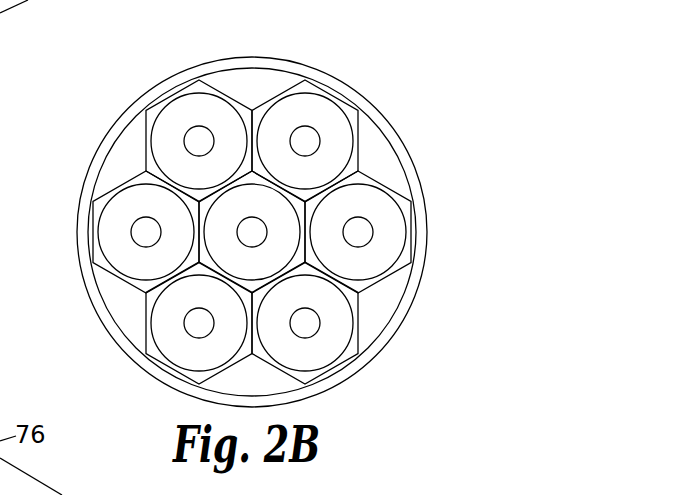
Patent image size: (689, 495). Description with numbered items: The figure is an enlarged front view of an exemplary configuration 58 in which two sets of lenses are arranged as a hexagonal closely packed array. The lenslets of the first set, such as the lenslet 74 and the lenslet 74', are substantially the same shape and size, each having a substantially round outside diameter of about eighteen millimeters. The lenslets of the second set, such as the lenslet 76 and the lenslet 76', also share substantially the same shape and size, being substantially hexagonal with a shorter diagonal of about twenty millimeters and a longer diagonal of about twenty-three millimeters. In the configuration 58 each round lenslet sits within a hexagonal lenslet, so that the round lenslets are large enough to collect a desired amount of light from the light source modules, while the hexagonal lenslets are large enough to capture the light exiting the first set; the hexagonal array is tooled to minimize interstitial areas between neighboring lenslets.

The configuration 58 is at (466, 193).
The lenslet 74 is at (356, 323).
The lenslet 76 is at (341, 327).
The lenslet 74' is at (305, 174).
The lenslet 76' is at (355, 141).